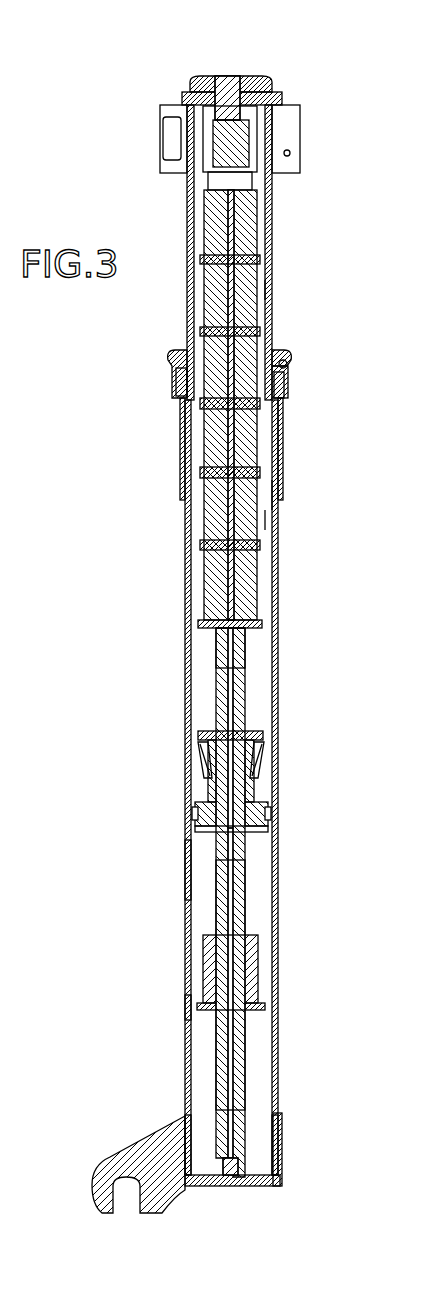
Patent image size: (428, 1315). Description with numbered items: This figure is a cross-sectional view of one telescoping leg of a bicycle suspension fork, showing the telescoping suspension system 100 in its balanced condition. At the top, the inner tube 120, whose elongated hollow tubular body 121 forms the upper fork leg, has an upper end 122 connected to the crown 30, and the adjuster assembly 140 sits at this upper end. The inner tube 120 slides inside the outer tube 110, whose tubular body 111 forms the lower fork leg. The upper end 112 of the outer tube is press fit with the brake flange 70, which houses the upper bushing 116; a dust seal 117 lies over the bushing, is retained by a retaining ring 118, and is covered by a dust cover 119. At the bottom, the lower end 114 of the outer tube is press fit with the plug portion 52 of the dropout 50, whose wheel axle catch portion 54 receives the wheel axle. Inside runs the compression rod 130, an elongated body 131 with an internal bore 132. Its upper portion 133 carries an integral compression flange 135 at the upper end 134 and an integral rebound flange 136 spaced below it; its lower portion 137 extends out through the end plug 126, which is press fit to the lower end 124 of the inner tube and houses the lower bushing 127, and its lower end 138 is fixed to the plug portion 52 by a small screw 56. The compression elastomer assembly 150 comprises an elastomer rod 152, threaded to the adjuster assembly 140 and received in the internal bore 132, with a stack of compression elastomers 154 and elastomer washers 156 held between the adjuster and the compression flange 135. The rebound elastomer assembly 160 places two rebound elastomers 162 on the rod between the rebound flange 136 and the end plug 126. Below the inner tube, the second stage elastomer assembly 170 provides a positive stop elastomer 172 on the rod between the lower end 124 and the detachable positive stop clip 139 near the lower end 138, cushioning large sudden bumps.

The telescoping suspension system 100 is at (96, 100).
The adjuster assembly 140 is at (182, 75).
The crown 30 is at (307, 106).
The inner tube 120 is at (182, 220).
The upper end of inner tube 122 is at (272, 145).
The elastomer rod 152 is at (208, 508).
The compression elastomers 154 is at (242, 228).
The elastomer washers 156 is at (212, 312).
The compression elastomer assembly 150 is at (266, 292).
The tubular body of inner tube 121 is at (270, 497).
The upper end of outer tube 112 is at (183, 435).
The dust cover 119 is at (277, 355).
The retaining ring 118 is at (284, 366).
The dust seal 117 is at (281, 374).
The upper bushing 116 is at (279, 392).
The brake flange 70 is at (178, 462).
The outer tube 110 is at (182, 940).
The compression flange 135 is at (262, 623).
The upper portion of compression rod 133 is at (217, 710).
The upper end of compression rod 134 is at (216, 630).
The internal bore 132 is at (246, 712).
The compression rod 130 is at (252, 885).
The elongated body of compression rod 131 is at (218, 904).
The rebound flange 136 is at (262, 734).
The rebound elastomer assembly 160 is at (262, 753).
The rebound elastomers 162 is at (206, 764).
The lower end of inner tube 124 is at (270, 790).
The lower bushing 127 is at (268, 828).
The end plug 126 is at (262, 838).
The tubular body of outer tube 111 is at (186, 862).
The positive stop elastomer 172 is at (252, 948).
The second stage elastomer assembly 170 is at (260, 990).
The positive stop clip 139 is at (192, 1008).
The lower portion of compression rod 137 is at (252, 1065).
The lower end of compression rod 138 is at (197, 1178).
The lower end of outer tube 114 is at (281, 1140).
The plug portion 52 is at (283, 1160).
The wheel axle catch portion 54 is at (100, 1168).
The dropout 50 is at (197, 1196).
The small screw 56 is at (238, 1183).